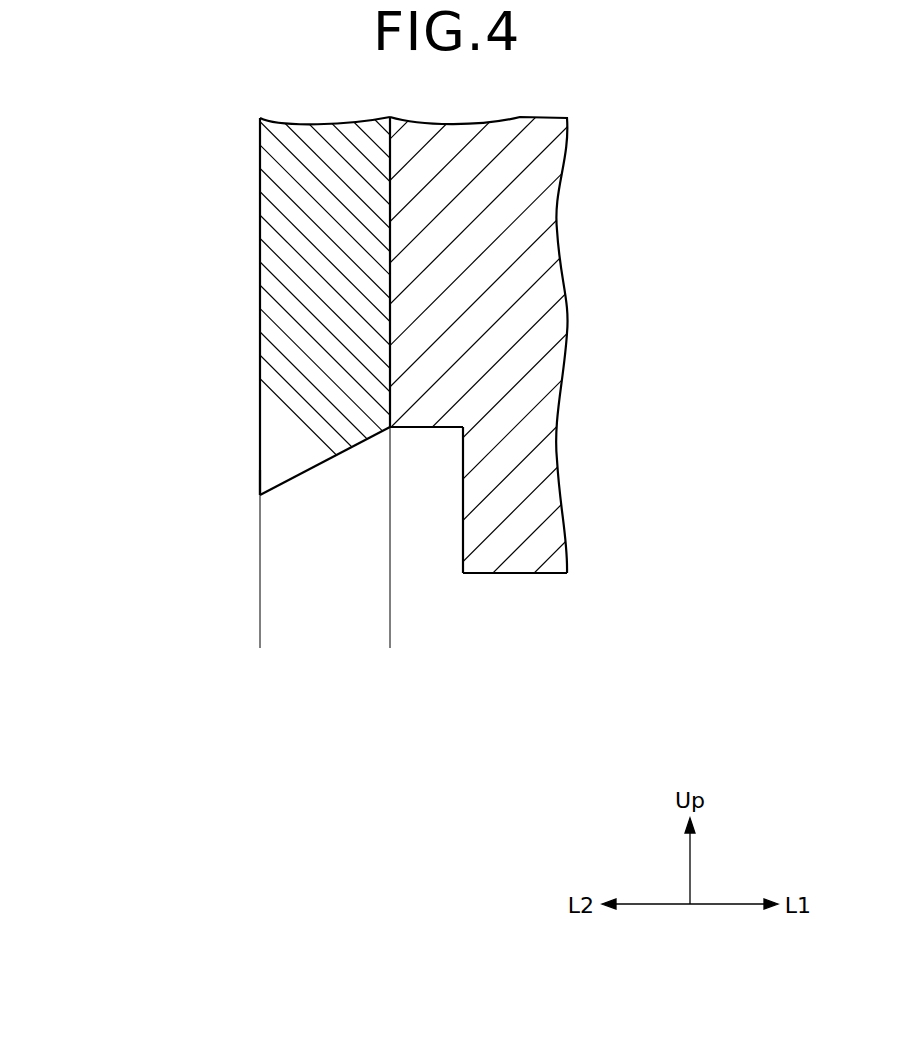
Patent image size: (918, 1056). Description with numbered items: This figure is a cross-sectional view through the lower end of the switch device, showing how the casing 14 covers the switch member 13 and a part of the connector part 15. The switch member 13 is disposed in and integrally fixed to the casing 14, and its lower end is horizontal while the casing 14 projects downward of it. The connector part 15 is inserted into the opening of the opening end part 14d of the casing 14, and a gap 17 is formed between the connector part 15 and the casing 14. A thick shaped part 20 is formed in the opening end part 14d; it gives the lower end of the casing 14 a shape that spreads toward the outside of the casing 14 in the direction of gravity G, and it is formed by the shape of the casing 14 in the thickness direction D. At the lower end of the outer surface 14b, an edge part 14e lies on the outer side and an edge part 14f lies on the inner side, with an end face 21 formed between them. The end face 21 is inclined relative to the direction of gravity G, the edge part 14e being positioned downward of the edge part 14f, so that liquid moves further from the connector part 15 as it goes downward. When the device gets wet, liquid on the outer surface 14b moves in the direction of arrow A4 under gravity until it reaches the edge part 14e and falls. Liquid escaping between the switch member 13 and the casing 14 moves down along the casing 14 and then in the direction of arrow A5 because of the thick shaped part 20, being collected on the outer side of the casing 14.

The switch member 13 is at (475, 211).
The casing 14 is at (260, 228).
The outer surface 14b is at (260, 163).
The opening end part 14d is at (242, 582).
The edge part 14e is at (260, 483).
The edge part 14f is at (391, 426).
The connector part 15 is at (523, 560).
The gap 17 is at (442, 496).
The thick shaped part 20 is at (283, 463).
The end face 21 is at (285, 487).
The arrow A4 is at (240, 382).
The arrow A5 is at (372, 470).
The thickness direction D is at (260, 633).
The direction of gravity G is at (65, 708).